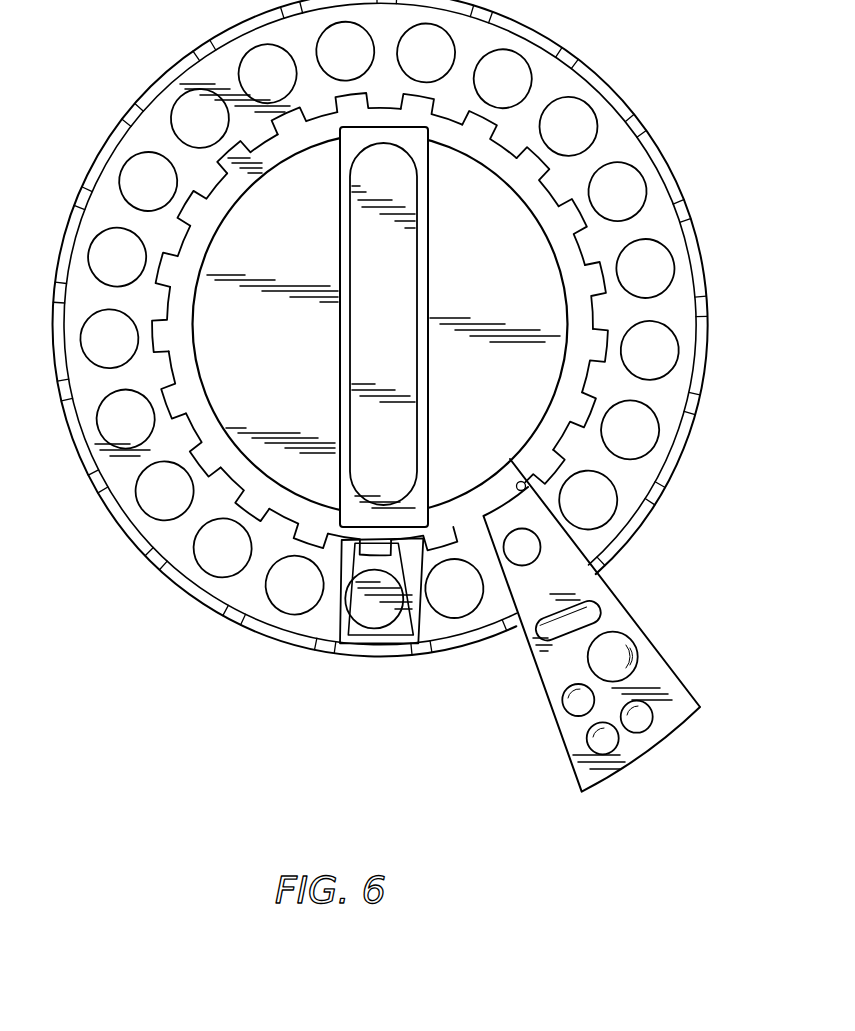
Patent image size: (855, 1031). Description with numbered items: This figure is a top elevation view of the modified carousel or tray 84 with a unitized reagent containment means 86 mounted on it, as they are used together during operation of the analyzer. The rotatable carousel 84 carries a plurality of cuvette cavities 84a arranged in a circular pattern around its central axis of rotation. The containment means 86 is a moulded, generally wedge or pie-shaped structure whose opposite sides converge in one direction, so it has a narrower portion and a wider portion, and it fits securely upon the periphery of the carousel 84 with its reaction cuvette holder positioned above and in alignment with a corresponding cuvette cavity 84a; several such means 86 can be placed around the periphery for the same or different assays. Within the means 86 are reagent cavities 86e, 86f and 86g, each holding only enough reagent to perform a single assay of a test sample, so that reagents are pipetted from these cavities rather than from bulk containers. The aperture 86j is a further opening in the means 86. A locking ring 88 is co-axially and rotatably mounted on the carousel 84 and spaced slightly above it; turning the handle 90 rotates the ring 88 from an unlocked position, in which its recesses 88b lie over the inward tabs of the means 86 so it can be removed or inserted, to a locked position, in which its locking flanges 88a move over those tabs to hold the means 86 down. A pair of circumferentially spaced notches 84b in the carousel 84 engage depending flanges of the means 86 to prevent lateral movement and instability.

The carousel or tray 84 is at (678, 181).
The cuvette cavities 84a is at (603, 498).
The notches 84b is at (592, 571).
The unitized reagent containment means 86 is at (650, 630).
The cavity 86e is at (650, 717).
The cavity 86f is at (608, 744).
The cavity 86g is at (566, 706).
The aperture 86j is at (652, 670).
The locking ring 88 is at (588, 282).
The locking flanges 88a is at (503, 552).
The recesses 88b is at (524, 483).
The handle 90 is at (430, 219).